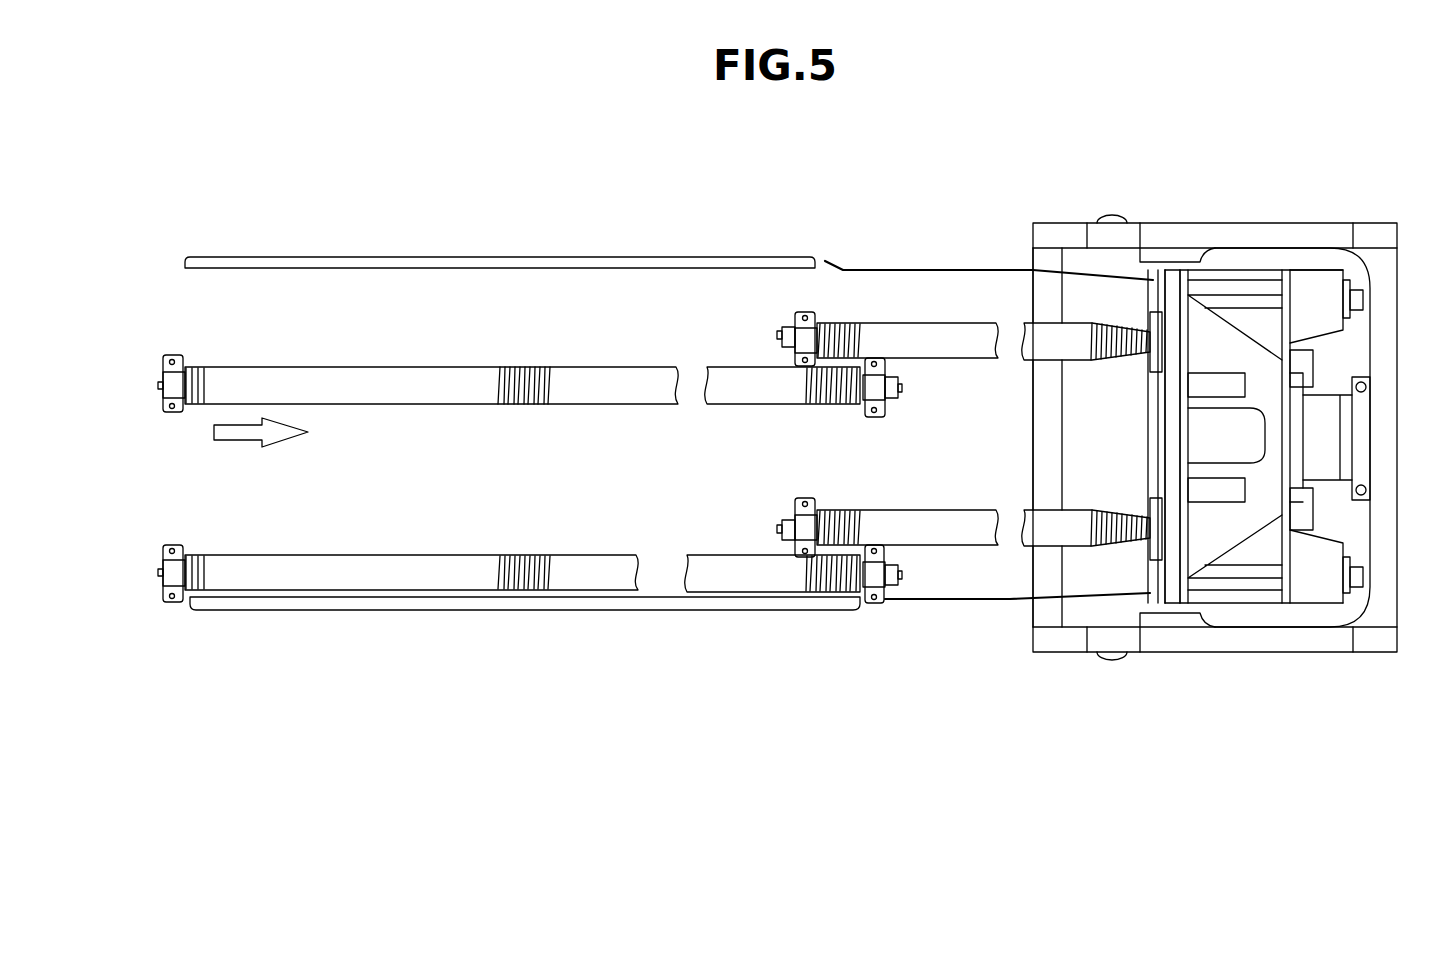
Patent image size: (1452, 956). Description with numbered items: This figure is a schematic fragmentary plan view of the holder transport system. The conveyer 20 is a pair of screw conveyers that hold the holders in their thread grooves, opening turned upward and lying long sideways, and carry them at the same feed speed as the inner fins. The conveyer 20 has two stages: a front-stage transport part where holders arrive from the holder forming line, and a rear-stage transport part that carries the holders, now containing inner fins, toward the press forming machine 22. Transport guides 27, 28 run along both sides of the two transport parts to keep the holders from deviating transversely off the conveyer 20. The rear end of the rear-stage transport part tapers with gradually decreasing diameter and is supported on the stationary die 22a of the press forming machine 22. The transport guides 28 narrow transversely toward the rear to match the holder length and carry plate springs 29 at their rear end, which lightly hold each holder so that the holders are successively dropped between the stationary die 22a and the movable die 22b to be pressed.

The conveyer 20 is at (429, 367).
The press forming machine 22 is at (1162, 434).
The stationary die 22a is at (1063, 471).
The movable die 22b is at (1173, 517).
The transport guide 27 is at (447, 257).
The transport guide 28 is at (958, 268).
The plate spring 29 is at (1158, 280).